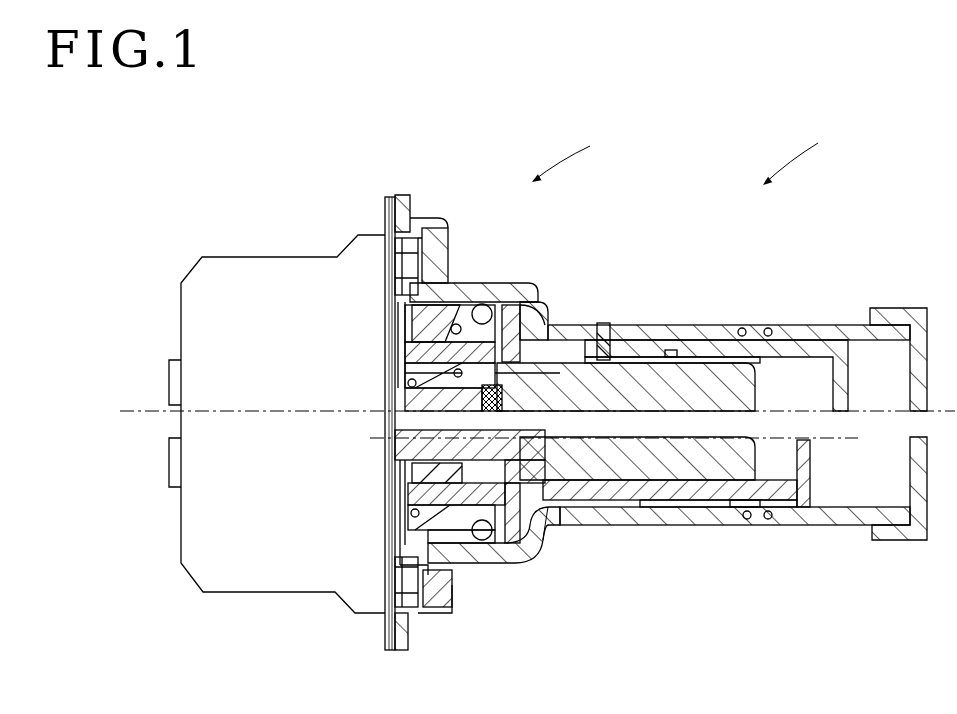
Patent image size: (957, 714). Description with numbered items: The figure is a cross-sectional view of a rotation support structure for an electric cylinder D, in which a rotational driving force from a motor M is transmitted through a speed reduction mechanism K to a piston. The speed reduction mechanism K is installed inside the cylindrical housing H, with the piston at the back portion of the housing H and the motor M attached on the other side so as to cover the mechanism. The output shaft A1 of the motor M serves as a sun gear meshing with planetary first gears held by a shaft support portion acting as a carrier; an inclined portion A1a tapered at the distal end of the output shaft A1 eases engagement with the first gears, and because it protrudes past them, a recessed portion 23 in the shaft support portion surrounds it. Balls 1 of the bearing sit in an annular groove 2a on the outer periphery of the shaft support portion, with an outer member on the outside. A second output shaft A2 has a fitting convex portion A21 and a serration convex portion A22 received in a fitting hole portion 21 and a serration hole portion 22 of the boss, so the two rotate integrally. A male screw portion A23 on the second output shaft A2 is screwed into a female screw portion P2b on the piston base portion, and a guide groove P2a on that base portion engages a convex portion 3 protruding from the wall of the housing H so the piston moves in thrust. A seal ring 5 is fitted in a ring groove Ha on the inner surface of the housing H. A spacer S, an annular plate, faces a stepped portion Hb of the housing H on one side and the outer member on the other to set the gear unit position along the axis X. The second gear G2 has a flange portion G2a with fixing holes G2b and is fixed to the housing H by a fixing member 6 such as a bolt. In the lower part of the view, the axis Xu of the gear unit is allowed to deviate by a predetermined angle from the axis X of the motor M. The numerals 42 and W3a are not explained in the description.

The axis X is at (527, 413).
The axis of the gear unit Xu is at (633, 440).
The motor M is at (212, 560).
The flange portion G2a is at (386, 233).
The second gear G2 is at (396, 302).
The fixing holes G2b is at (455, 590).
The fixing member 6 is at (387, 573).
The balls 1 is at (485, 287).
The stepped portion Hb is at (518, 300).
The housing H is at (833, 323).
The ring groove Ha is at (787, 347).
The seal ring 5 is at (737, 330).
The convex portion 3 is at (602, 322).
The guide groove P2a is at (667, 355).
The female screw portion P2b is at (677, 487).
The male screw portion A23 is at (790, 490).
The second output shaft A2 is at (733, 503).
The serration convex portion A22 is at (478, 456).
The serration hole portion 22 is at (460, 393).
The output shaft A1 is at (470, 398).
The inclined portion A1a is at (495, 375).
The annular groove 2a is at (505, 505).
The fitting convex portion A21 is at (450, 440).
The recessed portion 23 is at (430, 472).
The fitting hole portion 21 is at (470, 436).
The lower bearing race 42 is at (402, 498).
The washer W3a is at (510, 507).
The spacer S is at (537, 510).
The speed reduction mechanism K is at (571, 157).
The electric cylinder D is at (802, 159).